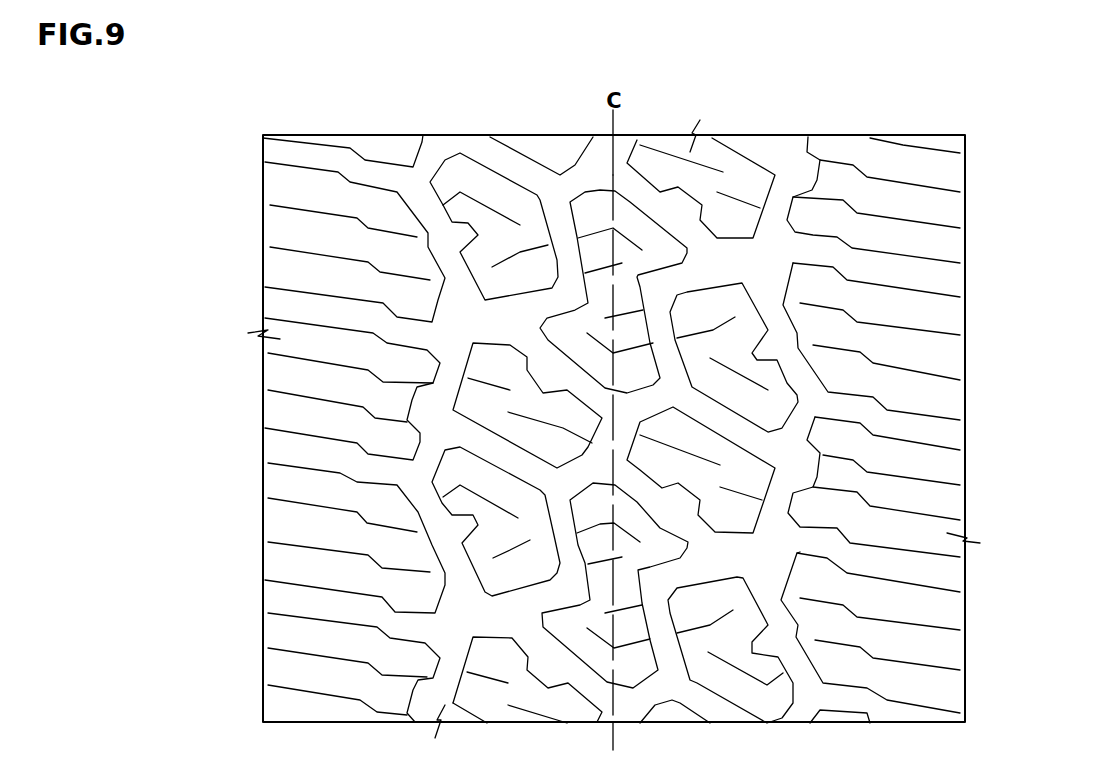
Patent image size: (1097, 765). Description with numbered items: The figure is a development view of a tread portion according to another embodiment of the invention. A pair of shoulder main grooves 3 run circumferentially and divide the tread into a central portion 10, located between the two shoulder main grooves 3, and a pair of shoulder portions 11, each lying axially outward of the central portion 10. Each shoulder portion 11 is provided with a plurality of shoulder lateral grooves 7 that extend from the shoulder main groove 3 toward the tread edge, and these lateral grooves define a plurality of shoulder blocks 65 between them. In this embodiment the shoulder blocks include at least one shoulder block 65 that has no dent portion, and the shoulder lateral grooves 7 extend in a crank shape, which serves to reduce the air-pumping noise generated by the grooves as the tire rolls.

The shoulder main groove 3 is at (424, 167).
The shoulder lateral groove 7 is at (330, 308).
The central portion 10 is at (598, 218).
The shoulder portion 11 is at (324, 195).
The shoulder block 65 is at (322, 382).